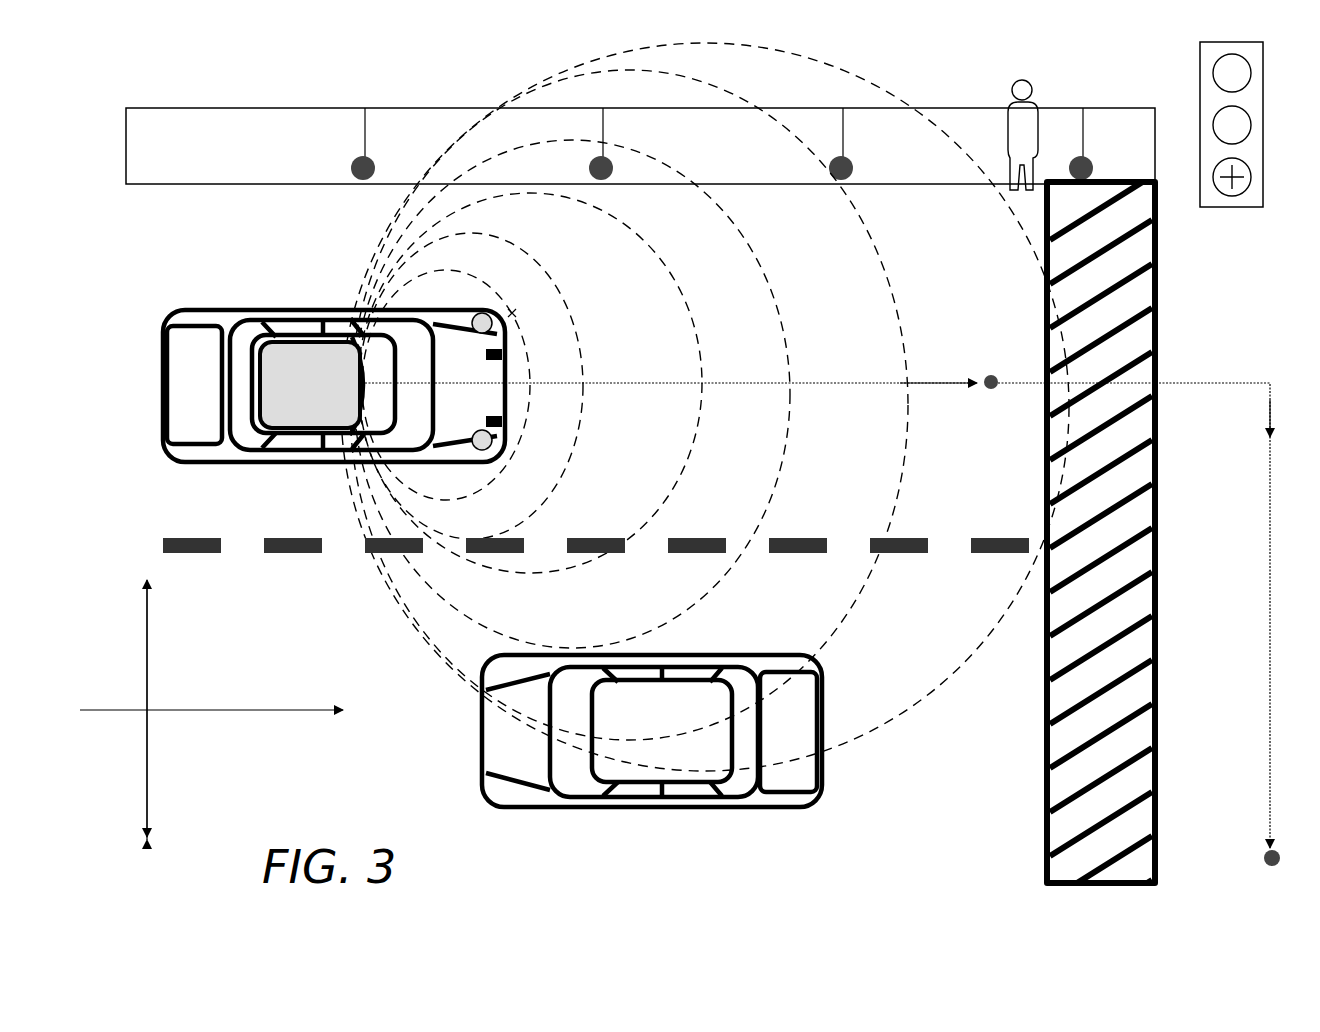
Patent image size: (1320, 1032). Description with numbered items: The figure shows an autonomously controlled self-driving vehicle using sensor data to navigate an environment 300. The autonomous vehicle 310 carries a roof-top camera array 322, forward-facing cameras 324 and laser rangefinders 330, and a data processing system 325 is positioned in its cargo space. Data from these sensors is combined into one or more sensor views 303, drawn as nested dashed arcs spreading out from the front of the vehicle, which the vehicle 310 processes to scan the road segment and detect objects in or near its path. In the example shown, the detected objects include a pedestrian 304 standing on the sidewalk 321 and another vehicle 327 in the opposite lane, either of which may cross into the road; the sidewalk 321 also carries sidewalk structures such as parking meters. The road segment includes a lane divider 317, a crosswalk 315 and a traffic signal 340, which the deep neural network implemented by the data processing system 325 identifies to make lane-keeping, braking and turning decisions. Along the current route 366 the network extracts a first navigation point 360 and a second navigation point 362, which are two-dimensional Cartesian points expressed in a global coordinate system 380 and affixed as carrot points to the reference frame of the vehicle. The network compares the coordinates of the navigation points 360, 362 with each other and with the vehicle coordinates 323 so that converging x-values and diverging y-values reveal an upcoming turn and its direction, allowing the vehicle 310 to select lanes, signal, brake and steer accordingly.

The environment 300 is at (203, 84).
The sensor view 303 is at (705, 407).
The pedestrian 304 is at (1030, 127).
The autonomous vehicle 310 is at (561, 378).
The crosswalk 315 is at (1101, 560).
The lane divider 317 is at (360, 557).
The sidewalk 321 is at (640, 146).
The roof-top camera array 322 is at (310, 385).
The vehicle coordinates 323 is at (561, 449).
The forward-facing cameras 324 is at (499, 328).
The data processing system 325 is at (194, 385).
The other vehicle 327 is at (630, 724).
The laser rangefinders 330 is at (518, 331).
The traffic signal 340 is at (1244, 169).
The navigation point 360 is at (962, 372).
The navigation point 362 is at (1262, 853).
The route 366 is at (1268, 568).
The global coordinate system 380 is at (211, 710).